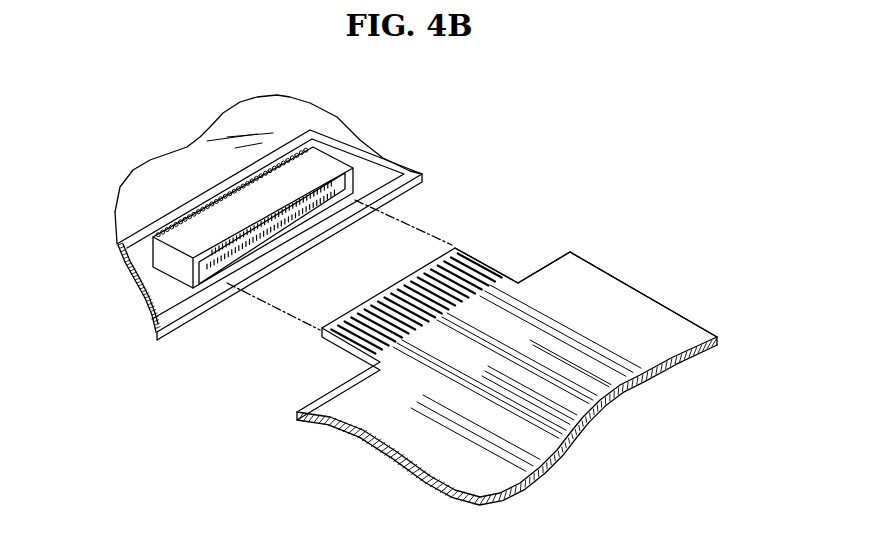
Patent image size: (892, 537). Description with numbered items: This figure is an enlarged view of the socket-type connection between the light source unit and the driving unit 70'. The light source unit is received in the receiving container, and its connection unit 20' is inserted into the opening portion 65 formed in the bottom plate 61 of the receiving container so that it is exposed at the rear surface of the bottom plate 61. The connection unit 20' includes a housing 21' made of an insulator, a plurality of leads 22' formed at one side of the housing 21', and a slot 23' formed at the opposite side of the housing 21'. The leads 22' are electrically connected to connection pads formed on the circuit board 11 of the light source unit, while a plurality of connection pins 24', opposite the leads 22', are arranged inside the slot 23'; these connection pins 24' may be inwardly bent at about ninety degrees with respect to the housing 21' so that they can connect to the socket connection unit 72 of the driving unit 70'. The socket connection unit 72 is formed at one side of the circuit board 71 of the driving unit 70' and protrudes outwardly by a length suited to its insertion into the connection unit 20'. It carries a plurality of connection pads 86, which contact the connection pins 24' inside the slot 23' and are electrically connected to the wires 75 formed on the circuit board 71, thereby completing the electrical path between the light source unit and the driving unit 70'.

The bottom plate 61 is at (277, 115).
The opening portion 65 is at (308, 124).
The circuit board 11 is at (363, 177).
The connection unit 20' is at (268, 193).
The housing 21' is at (173, 300).
The leads 22' is at (228, 175).
The slot 23' is at (263, 268).
The connection pins 24' is at (270, 237).
The driving unit 70' is at (507, 363).
The circuit board 71 is at (598, 275).
The socket connection unit 72 is at (500, 262).
The wires 75 is at (617, 353).
The connection pads 86 is at (458, 267).